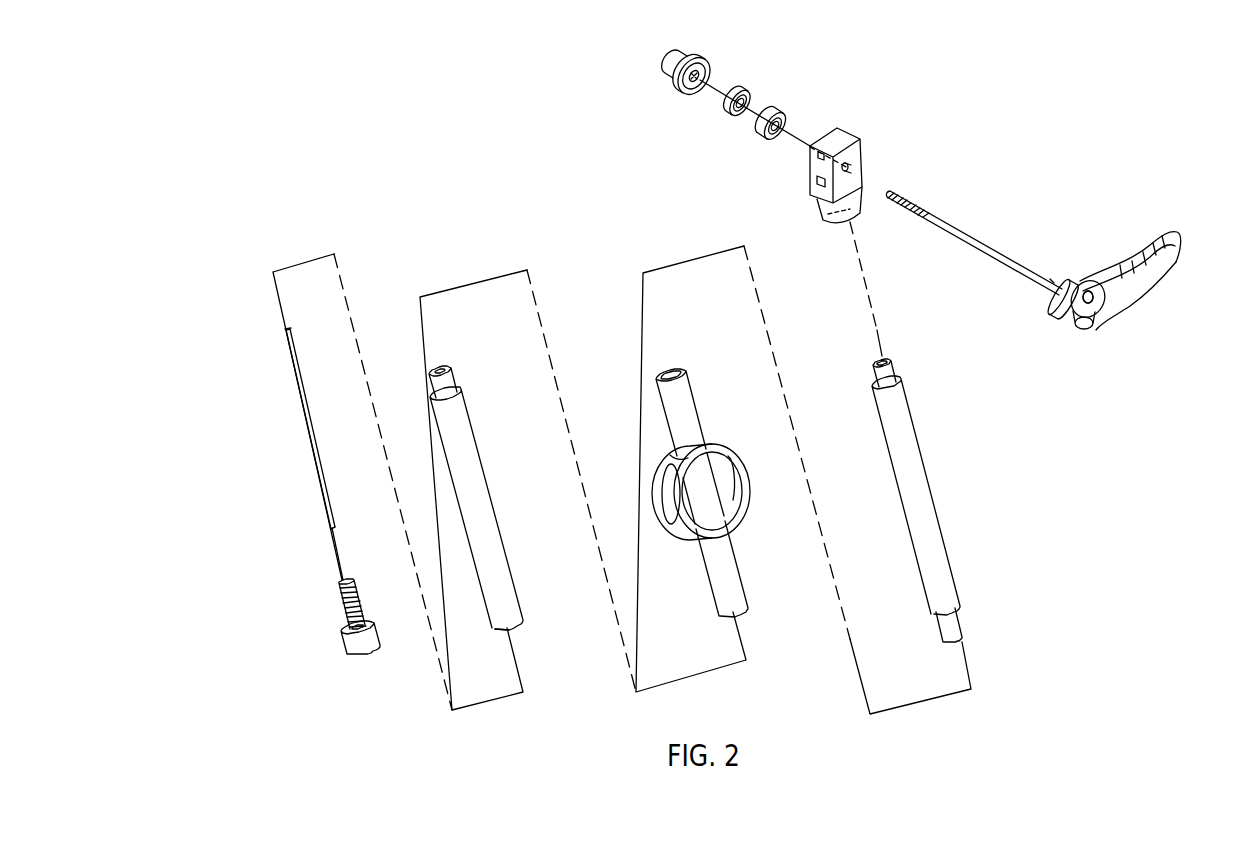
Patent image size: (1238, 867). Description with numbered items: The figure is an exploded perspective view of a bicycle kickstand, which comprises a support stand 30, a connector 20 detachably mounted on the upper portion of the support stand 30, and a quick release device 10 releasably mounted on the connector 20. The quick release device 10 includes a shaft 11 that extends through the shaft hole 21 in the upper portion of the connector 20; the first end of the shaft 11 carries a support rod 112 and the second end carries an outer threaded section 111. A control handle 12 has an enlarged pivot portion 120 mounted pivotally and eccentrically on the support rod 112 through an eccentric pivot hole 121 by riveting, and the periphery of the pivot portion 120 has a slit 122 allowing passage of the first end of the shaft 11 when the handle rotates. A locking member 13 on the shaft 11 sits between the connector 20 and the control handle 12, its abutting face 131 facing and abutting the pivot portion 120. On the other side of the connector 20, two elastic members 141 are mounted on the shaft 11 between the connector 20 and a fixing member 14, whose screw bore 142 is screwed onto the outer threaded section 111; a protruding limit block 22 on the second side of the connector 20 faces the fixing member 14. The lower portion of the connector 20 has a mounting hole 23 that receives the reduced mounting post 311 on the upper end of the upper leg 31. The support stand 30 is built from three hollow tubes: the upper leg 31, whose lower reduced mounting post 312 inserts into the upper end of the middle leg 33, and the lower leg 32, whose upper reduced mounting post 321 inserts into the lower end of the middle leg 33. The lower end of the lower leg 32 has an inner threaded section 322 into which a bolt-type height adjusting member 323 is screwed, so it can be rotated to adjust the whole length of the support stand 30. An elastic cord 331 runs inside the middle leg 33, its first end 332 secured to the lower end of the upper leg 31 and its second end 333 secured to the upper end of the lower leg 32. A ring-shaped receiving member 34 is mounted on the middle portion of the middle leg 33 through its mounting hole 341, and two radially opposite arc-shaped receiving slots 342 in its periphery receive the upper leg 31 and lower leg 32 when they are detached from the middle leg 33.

The quick release device 10 is at (1020, 217).
The shaft 11 is at (937, 223).
The outer threaded section 111 is at (915, 205).
The support rod 112 is at (1097, 302).
The control handle 12 is at (1148, 270).
The pivot portion 120 is at (1100, 327).
The eccentric pivot hole 121 is at (1088, 297).
The slit 122 is at (1087, 322).
The locking member 13 is at (1058, 317).
The abutting face 131 is at (1057, 303).
The fixing member 14 is at (665, 85).
The elastic members 141 is at (760, 108).
The screw bore 142 is at (707, 68).
The connector 20 is at (858, 129).
The shaft hole 21 is at (860, 156).
The limit block 22 is at (808, 175).
The mounting hole 23 is at (815, 208).
The support stand 30 is at (615, 298).
The upper leg 31 is at (927, 505).
The reduced mounting post 311 is at (888, 374).
The reduced mounting post 312 is at (957, 632).
The lower leg 32 is at (473, 493).
The reduced mounting post 321 is at (456, 382).
The inner threaded section 322 is at (509, 630).
The height adjusting member 323 is at (345, 643).
The middle leg 33 is at (681, 396).
The elastic cord 331 is at (314, 449).
The first end 332 is at (286, 330).
The second end 333 is at (333, 529).
The receiving member 34 is at (739, 532).
The mounting hole 341 is at (668, 457).
The receiving slots 342 is at (729, 463).